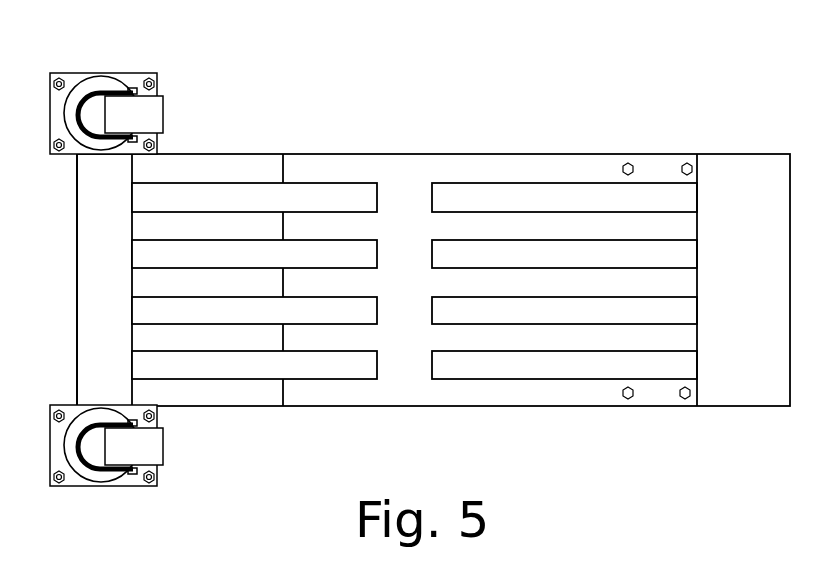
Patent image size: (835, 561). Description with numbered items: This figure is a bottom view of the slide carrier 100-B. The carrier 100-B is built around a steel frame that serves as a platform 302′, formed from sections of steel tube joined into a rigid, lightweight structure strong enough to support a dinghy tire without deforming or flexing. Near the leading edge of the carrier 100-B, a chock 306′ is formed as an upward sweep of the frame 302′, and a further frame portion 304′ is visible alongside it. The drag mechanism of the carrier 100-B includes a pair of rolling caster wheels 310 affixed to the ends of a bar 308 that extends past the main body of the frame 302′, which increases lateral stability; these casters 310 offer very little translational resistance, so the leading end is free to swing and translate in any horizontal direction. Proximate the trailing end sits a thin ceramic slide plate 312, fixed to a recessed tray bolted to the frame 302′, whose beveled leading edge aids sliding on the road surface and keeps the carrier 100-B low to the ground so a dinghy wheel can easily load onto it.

The slide carrier 100-B is at (706, 84).
The frame 302′ is at (453, 154).
The right slat section 304′ is at (491, 407).
The chock 306′ is at (225, 406).
The bar 308 is at (77, 233).
The rolling caster wheels 310 is at (165, 110).
The ceramic slide plate 312 is at (745, 406).